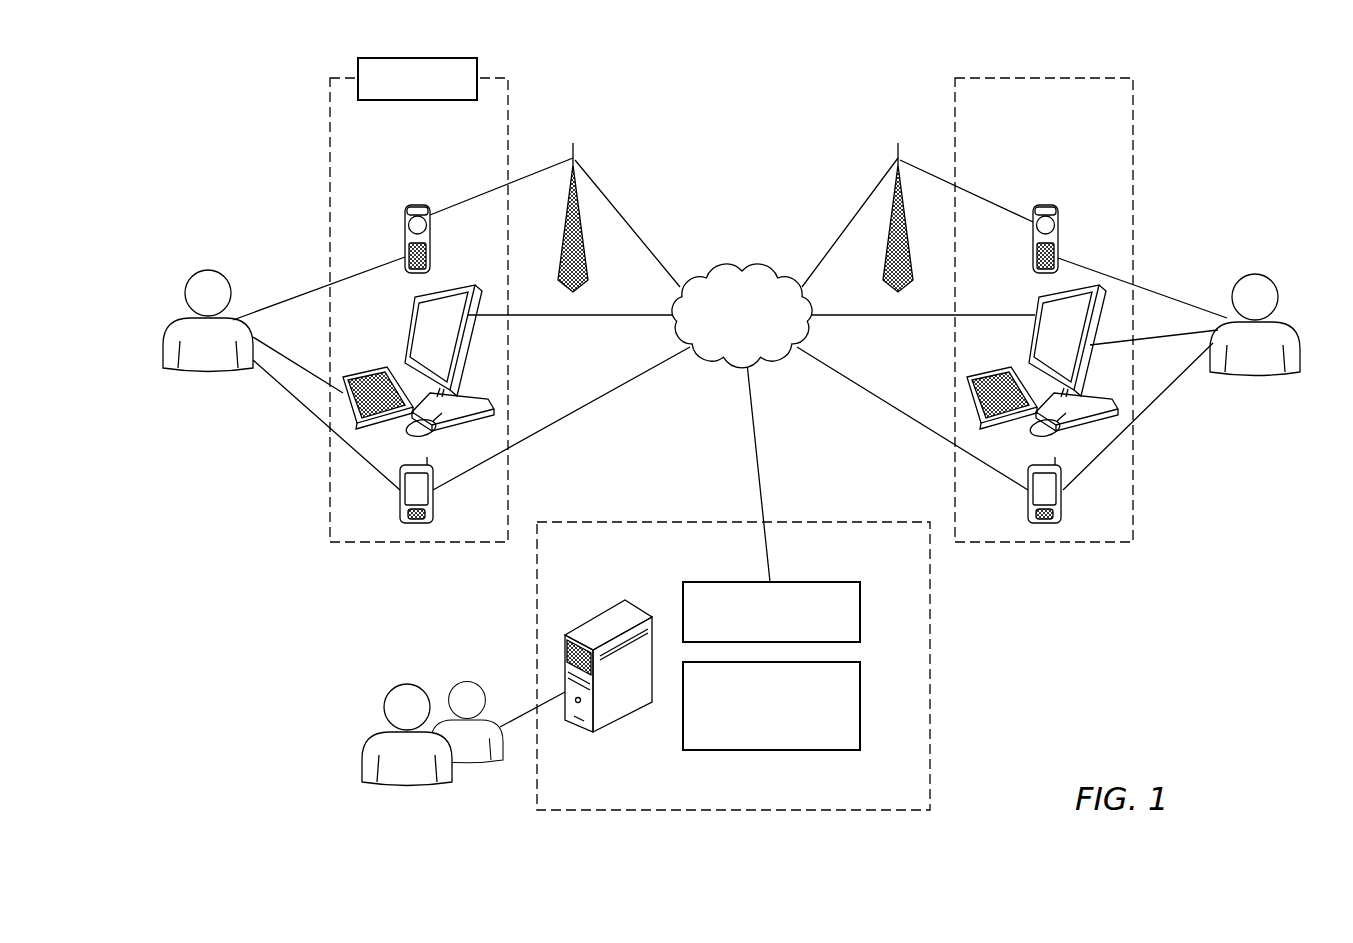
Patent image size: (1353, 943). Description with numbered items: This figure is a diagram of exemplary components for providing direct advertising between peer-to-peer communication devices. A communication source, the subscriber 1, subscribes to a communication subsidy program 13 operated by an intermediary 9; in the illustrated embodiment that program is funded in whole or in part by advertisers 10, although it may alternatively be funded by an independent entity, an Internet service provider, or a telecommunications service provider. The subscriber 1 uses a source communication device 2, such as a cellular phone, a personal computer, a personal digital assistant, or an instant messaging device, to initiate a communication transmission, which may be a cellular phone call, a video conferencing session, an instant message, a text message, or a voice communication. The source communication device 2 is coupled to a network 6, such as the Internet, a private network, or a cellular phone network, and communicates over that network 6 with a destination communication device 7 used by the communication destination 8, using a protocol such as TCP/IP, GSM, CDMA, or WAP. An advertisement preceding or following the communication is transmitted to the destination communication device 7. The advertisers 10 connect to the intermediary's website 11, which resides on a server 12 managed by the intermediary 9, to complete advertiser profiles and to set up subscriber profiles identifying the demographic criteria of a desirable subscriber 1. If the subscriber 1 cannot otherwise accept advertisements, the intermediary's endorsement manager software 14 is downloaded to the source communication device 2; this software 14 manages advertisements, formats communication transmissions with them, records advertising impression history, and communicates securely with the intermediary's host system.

The subscriber 1 is at (163, 350).
The source communication device 2 is at (328, 140).
The network 6 is at (712, 270).
The destination communication device 7 is at (1135, 138).
The communication destination 8 is at (1303, 343).
The intermediary 9 is at (930, 748).
The advertisers 10 is at (365, 759).
The intermediary's website 11 is at (860, 612).
The server 12 is at (637, 605).
The communication subsidy program 13 is at (860, 703).
The endorsement manager software 14 is at (417, 55).